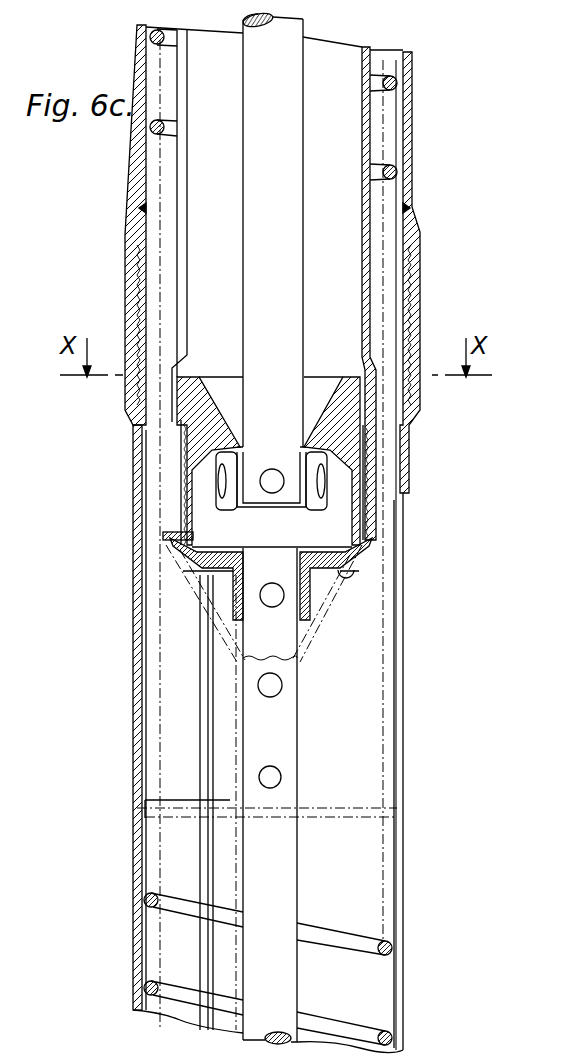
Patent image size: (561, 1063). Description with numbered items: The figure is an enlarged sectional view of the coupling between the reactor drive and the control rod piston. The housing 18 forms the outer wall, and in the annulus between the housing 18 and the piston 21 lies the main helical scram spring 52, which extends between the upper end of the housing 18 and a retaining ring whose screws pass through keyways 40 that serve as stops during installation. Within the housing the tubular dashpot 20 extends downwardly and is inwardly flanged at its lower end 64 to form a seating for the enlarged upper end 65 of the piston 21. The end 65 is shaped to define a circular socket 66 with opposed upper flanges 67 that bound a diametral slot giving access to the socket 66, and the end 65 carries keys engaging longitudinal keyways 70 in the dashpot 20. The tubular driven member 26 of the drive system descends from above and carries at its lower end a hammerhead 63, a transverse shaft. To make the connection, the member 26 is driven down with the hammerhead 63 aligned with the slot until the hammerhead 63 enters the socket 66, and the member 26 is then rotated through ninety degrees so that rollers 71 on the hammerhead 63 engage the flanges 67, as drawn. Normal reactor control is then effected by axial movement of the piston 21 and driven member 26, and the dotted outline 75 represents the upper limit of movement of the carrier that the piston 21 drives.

The housing 18 is at (407, 135).
The tubular dashpot 20 is at (367, 197).
The piston 21 is at (280, 712).
The tubular driven member 26 is at (290, 66).
The keyways 40 is at (400, 880).
The main helical scram spring 52 is at (150, 134).
The hammerhead 63 is at (328, 484).
The lower end of dashpot 64 is at (352, 572).
The enlarged upper end of piston 65 is at (183, 538).
The circular socket 66 is at (372, 547).
The upper flanges 67 is at (196, 415).
The longitudinal keyways 70 is at (180, 262).
The rollers 71 is at (226, 506).
The dotted outline 75 is at (330, 630).